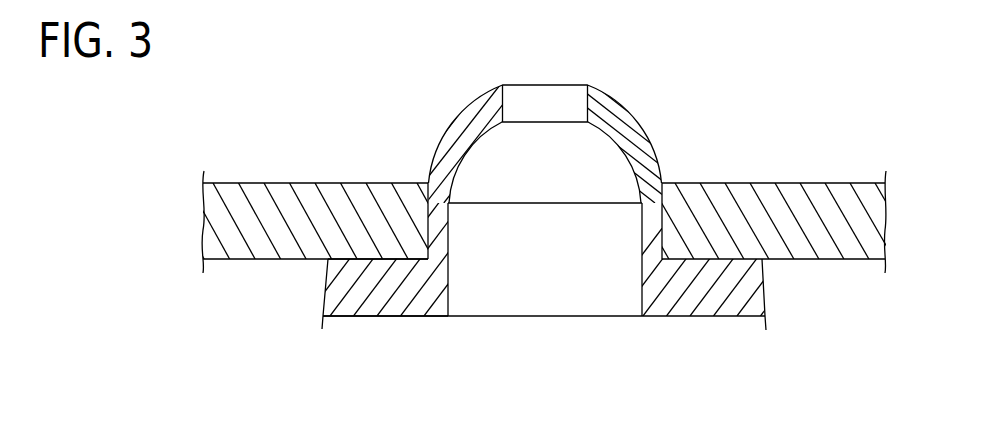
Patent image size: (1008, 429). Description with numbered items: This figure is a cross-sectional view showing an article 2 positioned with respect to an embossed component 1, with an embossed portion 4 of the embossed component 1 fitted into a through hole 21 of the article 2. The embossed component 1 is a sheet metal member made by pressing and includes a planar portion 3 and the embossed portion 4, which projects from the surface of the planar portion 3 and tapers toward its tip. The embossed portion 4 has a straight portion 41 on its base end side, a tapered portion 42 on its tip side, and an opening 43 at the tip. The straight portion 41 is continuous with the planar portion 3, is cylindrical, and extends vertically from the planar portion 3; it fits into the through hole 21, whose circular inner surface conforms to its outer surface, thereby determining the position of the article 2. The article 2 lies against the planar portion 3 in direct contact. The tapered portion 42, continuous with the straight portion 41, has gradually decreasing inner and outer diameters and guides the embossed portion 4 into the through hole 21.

The embossed component 1 is at (710, 317).
The article 2 is at (840, 260).
The through hole 21 is at (660, 215).
The planar portion 3 is at (370, 298).
The embossed portion 4 is at (607, 169).
The straight portion 41 is at (656, 212).
The tapered portion 42 is at (620, 105).
The opening 43 is at (505, 101).